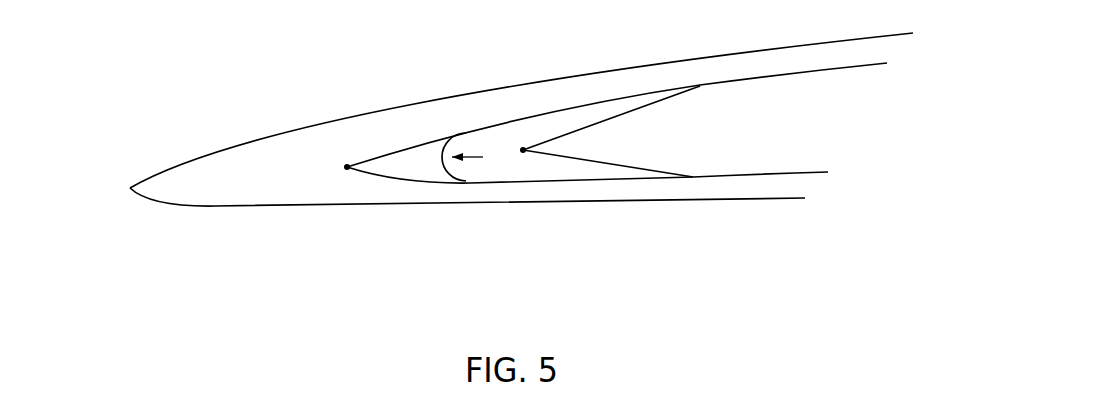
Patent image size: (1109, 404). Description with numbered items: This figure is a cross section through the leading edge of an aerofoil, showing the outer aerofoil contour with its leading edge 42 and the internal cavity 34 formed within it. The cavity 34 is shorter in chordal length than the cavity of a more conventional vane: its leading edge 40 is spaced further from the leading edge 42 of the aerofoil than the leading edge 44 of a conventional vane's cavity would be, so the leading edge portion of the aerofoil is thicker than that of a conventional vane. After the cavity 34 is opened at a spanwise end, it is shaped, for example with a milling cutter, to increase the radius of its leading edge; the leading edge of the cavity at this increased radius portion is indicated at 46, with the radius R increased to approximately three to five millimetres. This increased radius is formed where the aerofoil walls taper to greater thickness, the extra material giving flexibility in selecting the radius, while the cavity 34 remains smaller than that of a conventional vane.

The cavity 34 is at (773, 149).
The leading edge of the cavity 40 is at (521, 160).
The leading edge of the aerofoil 42 is at (128, 188).
The leading edge of a cavity of a conventional vane 44 is at (346, 174).
The leading edge of the cavity at the increased radius portion 46 is at (455, 126).